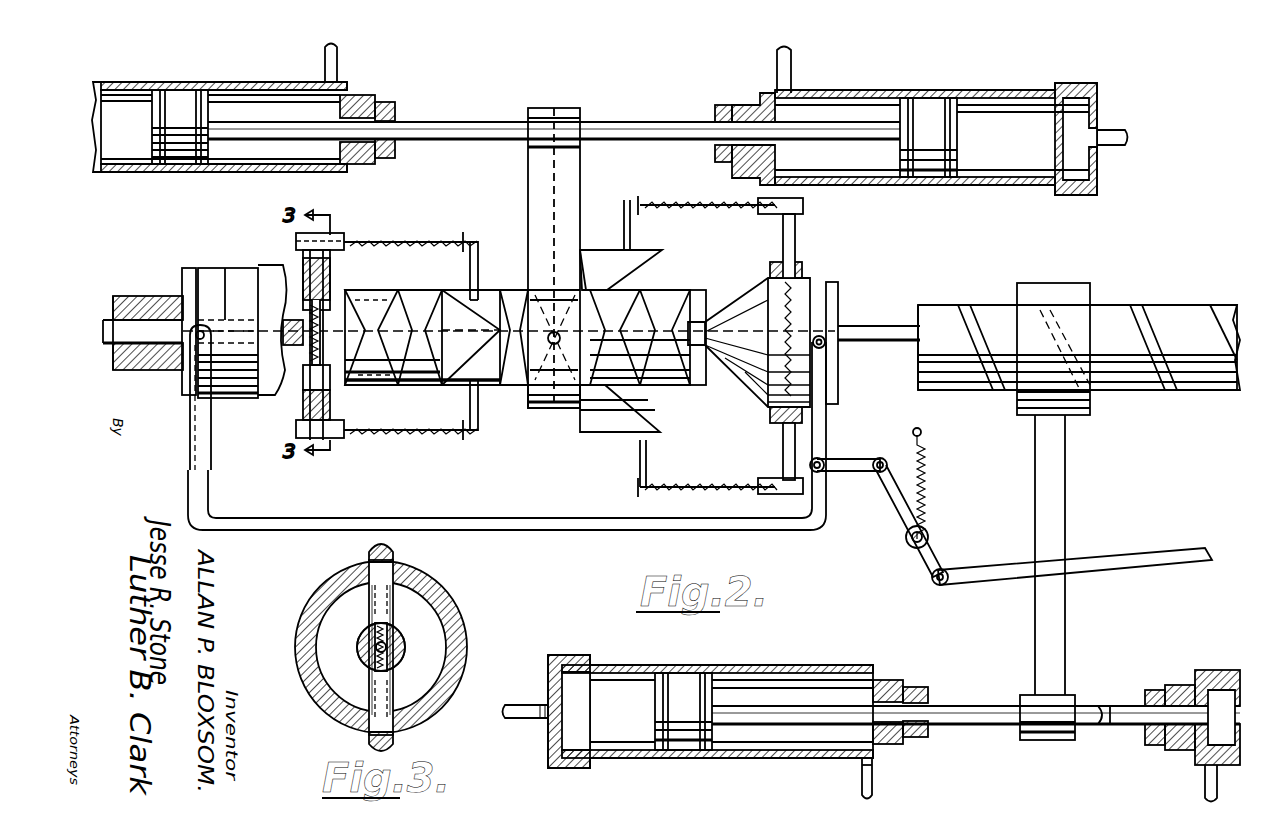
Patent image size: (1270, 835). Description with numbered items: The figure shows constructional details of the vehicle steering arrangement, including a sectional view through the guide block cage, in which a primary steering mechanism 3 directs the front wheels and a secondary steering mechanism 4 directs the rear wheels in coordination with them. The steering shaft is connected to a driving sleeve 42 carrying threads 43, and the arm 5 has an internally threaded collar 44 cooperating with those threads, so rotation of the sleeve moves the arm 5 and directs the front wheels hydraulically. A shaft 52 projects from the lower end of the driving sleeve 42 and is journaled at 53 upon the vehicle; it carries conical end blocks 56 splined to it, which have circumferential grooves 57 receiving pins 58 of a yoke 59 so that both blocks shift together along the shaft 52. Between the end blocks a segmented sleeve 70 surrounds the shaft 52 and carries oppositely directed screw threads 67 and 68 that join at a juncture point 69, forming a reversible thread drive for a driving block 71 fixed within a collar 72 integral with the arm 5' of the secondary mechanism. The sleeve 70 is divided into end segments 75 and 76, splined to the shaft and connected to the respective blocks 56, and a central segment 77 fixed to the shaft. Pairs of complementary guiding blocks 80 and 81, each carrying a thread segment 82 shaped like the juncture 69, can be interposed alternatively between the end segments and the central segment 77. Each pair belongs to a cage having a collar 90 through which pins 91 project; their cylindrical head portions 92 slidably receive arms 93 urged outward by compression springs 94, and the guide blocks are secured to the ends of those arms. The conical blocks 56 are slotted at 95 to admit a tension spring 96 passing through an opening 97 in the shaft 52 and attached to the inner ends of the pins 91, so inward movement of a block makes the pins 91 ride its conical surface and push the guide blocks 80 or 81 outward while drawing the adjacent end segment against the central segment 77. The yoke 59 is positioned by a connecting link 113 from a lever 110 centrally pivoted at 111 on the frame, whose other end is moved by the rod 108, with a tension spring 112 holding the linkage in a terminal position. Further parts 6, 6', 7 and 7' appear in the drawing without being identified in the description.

In FIG. 2, the primary steering mechanism 3 is at (1162, 300).
In FIG. 2, the secondary steering mechanism 4 is at (490, 245).
In FIG. 2, the arm 5 is at (1062, 577).
In FIG. 2, the arm 5' is at (525, 258).
In FIG. 2, the piston 6 is at (683, 687).
In FIG. 2, the piston 6' is at (554, 109).
In FIG. 2, the cylinder 7 is at (716, 712).
In FIG. 2, the cylinder 7' is at (610, 115).
In FIG. 2, the driving sleeve 42 is at (960, 392).
In FIG. 2, the threads 43 is at (1160, 392).
In FIG. 2, the collar 44 is at (1092, 405).
In FIG. 2, the shaft 52 is at (893, 320).
In FIG. 3, the shaft 52 is at (358, 660).
In FIG. 2, the journal 53 is at (128, 298).
In FIG. 2, the conical end blocks 56 is at (230, 272).
In FIG. 2, the circumferential grooves 57 is at (195, 270).
In FIG. 2, the pins 58 is at (195, 330).
In FIG. 2, the yoke 59 is at (208, 472).
In FIG. 2, the screw threads 67 is at (390, 298).
In FIG. 2, the screw threads 68 is at (435, 298).
In FIG. 2, the juncture point 69 is at (275, 290).
In FIG. 2, the segmented sleeve 70 is at (428, 380).
In FIG. 2, the driving block 71 is at (552, 280).
In FIG. 2, the collar 72 is at (522, 232).
In FIG. 2, the end segment 75 is at (385, 385).
In FIG. 2, the end segment 76 is at (635, 385).
In FIG. 2, the central segment 77 is at (552, 410).
In FIG. 2, the guiding blocks 80 is at (478, 305).
In FIG. 2, the guiding blocks 81 is at (612, 252).
In FIG. 2, the thread segment 82 is at (500, 295).
In FIG. 2, the collar 90 is at (300, 428).
In FIG. 3, the collar 90 is at (318, 690).
In FIG. 2, the pins 91 is at (300, 395).
In FIG. 3, the pins 91 is at (360, 695).
In FIG. 2, the cylindrical head portions 92 is at (300, 245).
In FIG. 3, the cylindrical head portions 92 is at (398, 550).
In FIG. 2, the arms 93 is at (367, 238).
In FIG. 3, the arms 93 is at (368, 549).
In FIG. 2, the compression springs 94 is at (420, 240).
In FIG. 2, the slots 95 is at (310, 320).
In FIG. 3, the slots 95 is at (330, 576).
In FIG. 2, the tension spring 96 is at (335, 340).
In FIG. 3, the tension spring 96 is at (362, 630).
In FIG. 3, the opening 97 is at (358, 648).
In FIG. 2, the rod 108 is at (958, 578).
In FIG. 2, the lever 110 is at (905, 520).
In FIG. 2, the pivot 111 is at (910, 545).
In FIG. 2, the tension spring 112 is at (935, 483).
In FIG. 2, the connecting link 113 is at (858, 465).